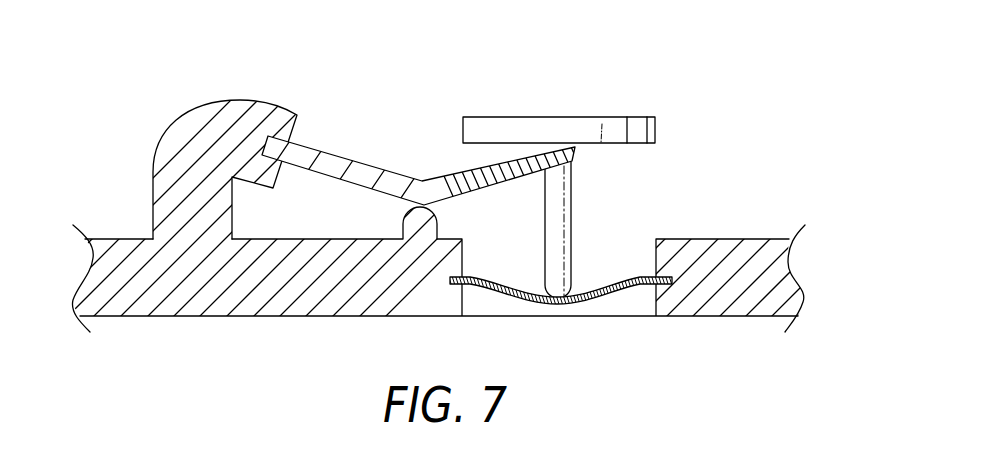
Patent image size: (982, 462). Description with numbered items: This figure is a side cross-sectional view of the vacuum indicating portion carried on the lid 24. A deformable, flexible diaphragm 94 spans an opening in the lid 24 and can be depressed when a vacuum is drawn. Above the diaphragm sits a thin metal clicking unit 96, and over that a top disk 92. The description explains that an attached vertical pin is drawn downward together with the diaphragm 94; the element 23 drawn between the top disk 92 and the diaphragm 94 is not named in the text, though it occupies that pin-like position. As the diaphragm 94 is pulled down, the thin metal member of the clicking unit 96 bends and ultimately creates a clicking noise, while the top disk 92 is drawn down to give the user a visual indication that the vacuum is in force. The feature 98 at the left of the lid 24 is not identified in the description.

The pin 23 is at (565, 205).
The lid 24 is at (785, 288).
The top disk 92 is at (603, 124).
The deformable diaphragm 94 is at (603, 302).
The metal clicking unit 96 is at (345, 160).
The hump 98 is at (185, 128).